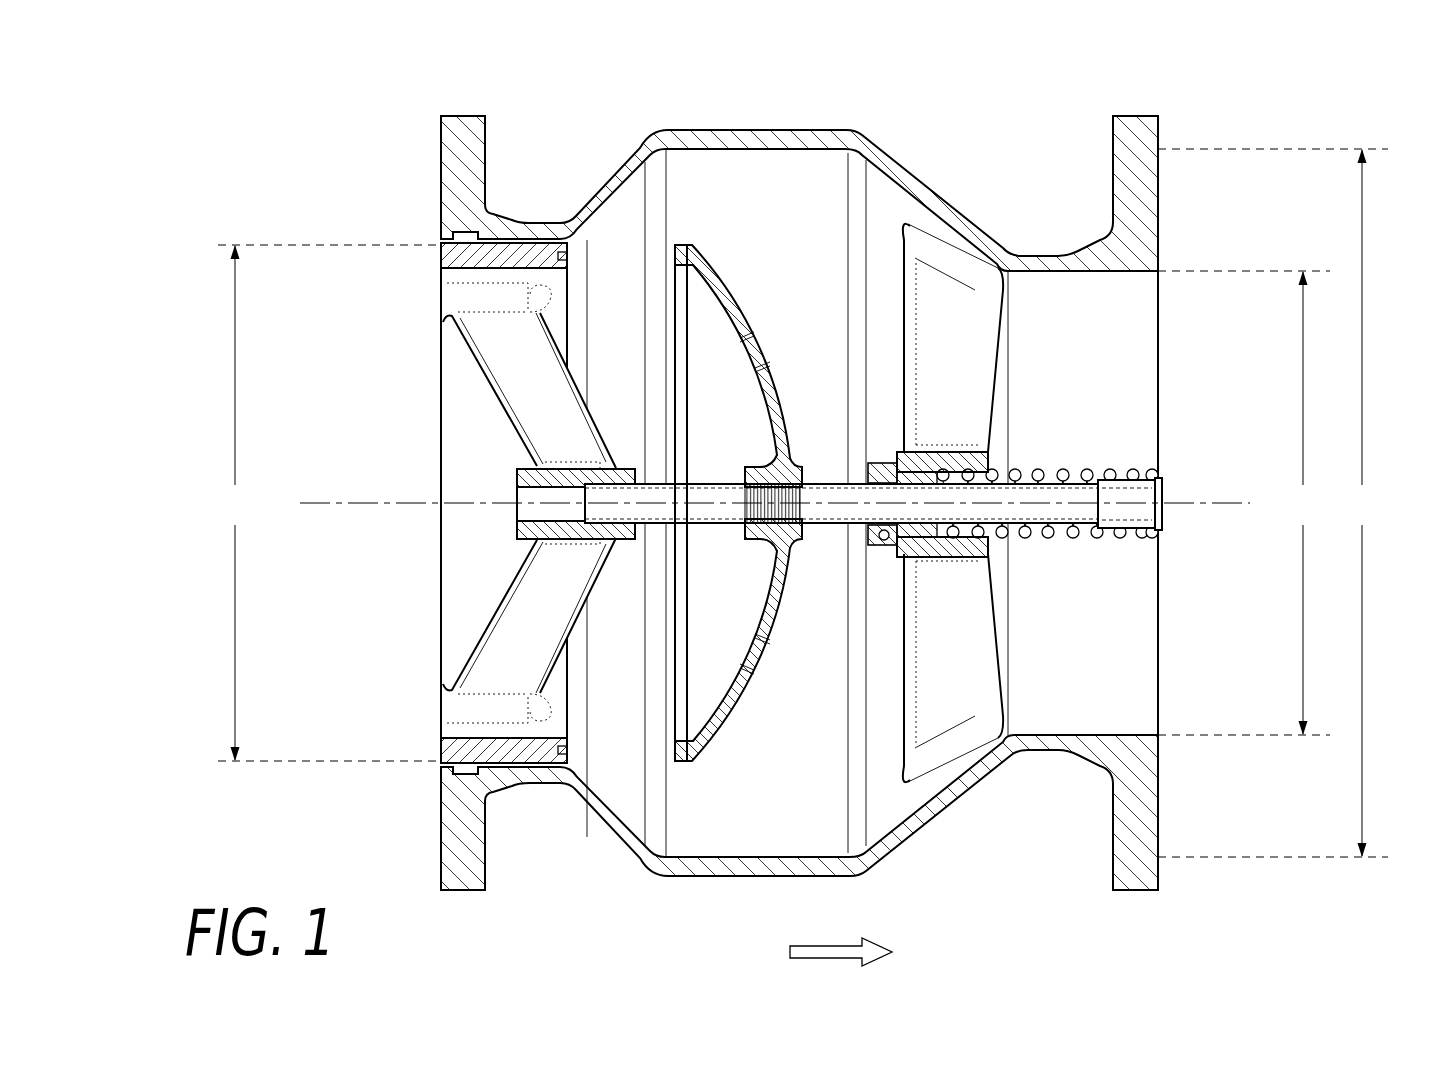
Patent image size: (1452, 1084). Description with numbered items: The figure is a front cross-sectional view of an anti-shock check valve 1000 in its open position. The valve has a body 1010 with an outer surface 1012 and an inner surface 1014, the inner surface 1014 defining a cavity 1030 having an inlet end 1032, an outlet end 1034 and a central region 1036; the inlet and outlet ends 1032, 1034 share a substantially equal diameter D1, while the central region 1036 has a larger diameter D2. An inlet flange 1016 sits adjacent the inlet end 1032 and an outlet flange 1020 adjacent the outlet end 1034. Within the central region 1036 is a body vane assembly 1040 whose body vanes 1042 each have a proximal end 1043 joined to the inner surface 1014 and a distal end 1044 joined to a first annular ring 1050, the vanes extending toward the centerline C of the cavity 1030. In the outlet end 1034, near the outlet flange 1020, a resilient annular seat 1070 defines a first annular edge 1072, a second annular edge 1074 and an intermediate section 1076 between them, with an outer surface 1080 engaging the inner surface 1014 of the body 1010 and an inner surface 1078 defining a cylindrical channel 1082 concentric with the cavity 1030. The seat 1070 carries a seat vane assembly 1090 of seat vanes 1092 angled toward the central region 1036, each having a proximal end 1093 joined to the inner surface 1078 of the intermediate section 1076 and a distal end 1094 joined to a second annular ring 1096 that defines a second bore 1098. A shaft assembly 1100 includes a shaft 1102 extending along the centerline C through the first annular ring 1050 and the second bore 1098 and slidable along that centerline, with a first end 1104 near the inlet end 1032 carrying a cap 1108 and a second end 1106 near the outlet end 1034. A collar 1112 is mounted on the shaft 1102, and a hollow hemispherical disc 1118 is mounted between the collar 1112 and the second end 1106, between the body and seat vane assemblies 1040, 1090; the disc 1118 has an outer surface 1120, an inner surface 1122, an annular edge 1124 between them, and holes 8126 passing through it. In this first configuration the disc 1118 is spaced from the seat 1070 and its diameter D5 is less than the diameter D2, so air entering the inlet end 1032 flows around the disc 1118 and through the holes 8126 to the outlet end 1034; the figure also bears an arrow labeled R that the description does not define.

The anti-shock check valve 1000 is at (272, 181).
The body 1010 is at (928, 852).
The outer surface 1012 is at (705, 124).
The inner surface 1014 is at (752, 156).
The inlet flange 1016 is at (1150, 133).
The outlet flange 1020 is at (458, 141).
The cavity 1030 is at (798, 228).
The inlet end 1032 is at (1122, 374).
The outlet end 1034 is at (468, 623).
The central region 1036 is at (727, 828).
The body vane assembly 1040 is at (1010, 622).
The body vanes 1042 is at (962, 326).
The proximal end 1043 is at (950, 742).
The distal end 1044 is at (950, 445).
The first annular ring 1050 is at (952, 560).
The annular seat 1070 is at (466, 401).
The first annular edge 1072 is at (604, 714).
The second annular edge 1074 is at (445, 524).
The intermediate section 1076 is at (470, 442).
The inner surface 1078 is at (470, 550).
The outer surface 1080 is at (516, 230).
The cylindrical channel 1082 is at (502, 486).
The seat vane assembly 1090 is at (614, 606).
The seat vanes 1092 is at (525, 372).
The proximal end 1093 is at (500, 296).
The distal end 1094 is at (573, 458).
The second annular ring 1096 is at (572, 545).
The second bore 1098 is at (517, 560).
The shaft assembly 1100 is at (1100, 558).
The shaft 1102 is at (1052, 490).
The first end 1104 is at (1128, 495).
The second end 1106 is at (622, 492).
The cap 1108 is at (1163, 527).
The collar 1112 is at (880, 548).
The disc 1118 is at (774, 714).
The outer surface 1120 is at (740, 728).
The inner surface 1122 is at (688, 692).
The annular edge 1124 is at (670, 753).
The holes 8126 is at (760, 340).
The centerline C is at (327, 492).
The flow direction R is at (841, 933).
The diameter of inlet and outlet ends D1 is at (1244, 503).
The diameter of central region D2 is at (1273, 503).
The diameter of disc D5 is at (329, 503).